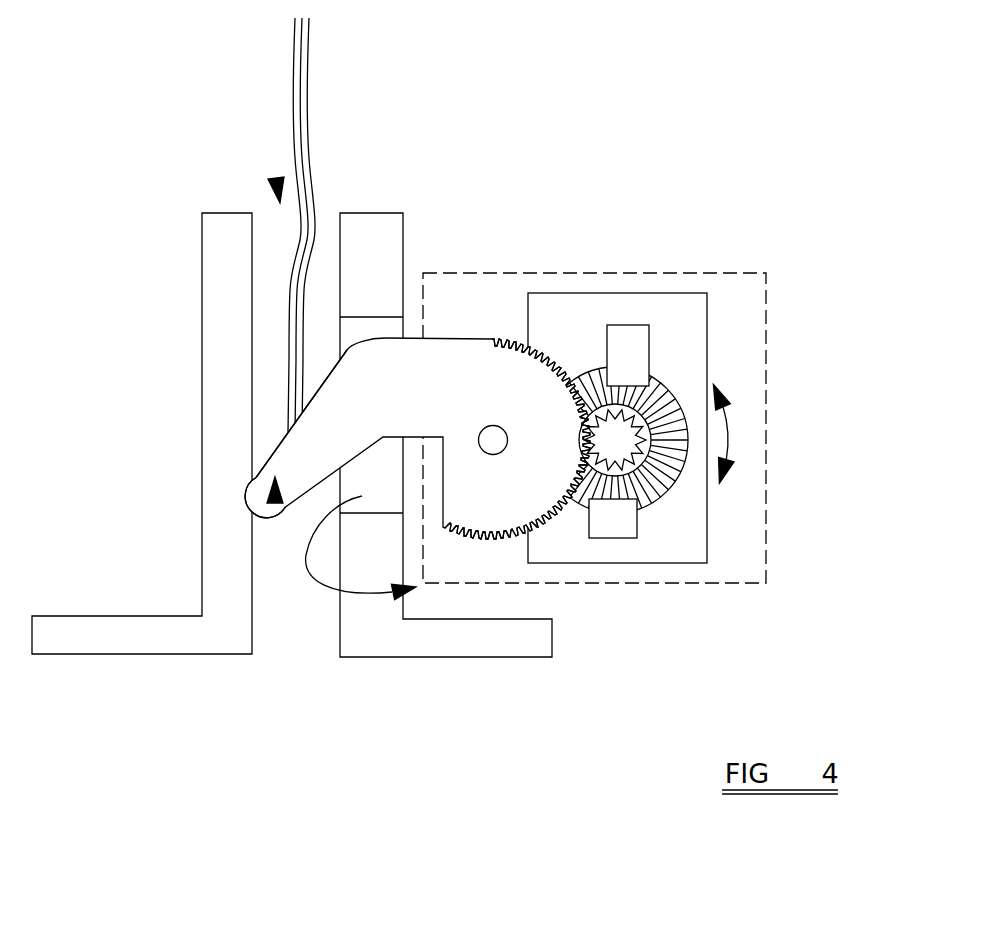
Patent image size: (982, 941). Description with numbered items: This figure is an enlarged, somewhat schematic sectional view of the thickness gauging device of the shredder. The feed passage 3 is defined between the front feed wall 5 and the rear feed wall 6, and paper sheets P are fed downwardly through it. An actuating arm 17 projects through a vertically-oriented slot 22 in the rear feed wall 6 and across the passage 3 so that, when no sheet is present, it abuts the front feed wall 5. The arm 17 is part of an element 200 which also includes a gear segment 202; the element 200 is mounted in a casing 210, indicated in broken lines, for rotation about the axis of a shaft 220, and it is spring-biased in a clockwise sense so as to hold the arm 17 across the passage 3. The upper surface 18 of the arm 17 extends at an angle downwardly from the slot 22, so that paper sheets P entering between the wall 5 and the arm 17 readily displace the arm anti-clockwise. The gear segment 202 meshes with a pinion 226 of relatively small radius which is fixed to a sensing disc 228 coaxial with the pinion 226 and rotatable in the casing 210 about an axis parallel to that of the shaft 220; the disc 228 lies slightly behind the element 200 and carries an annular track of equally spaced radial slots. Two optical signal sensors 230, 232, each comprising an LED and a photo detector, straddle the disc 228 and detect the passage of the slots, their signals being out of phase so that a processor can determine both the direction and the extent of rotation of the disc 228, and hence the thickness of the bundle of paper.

The paper sheets P is at (288, 73).
The feed passage 3 is at (278, 180).
The front feed wall 5 is at (253, 283).
The rear feed wall 6 is at (340, 258).
The actuating arm 17 is at (308, 448).
The upper surface 18 is at (317, 391).
The slot 22 is at (276, 500).
The element 200 is at (451, 314).
The gear segment 202 is at (515, 402).
The casing 210 is at (744, 273).
The shaft 220 is at (497, 445).
The pinion 226 is at (632, 448).
The sensing disc 228 is at (653, 402).
The optical signal sensor 230 is at (618, 523).
The optical signal sensor 232 is at (633, 342).